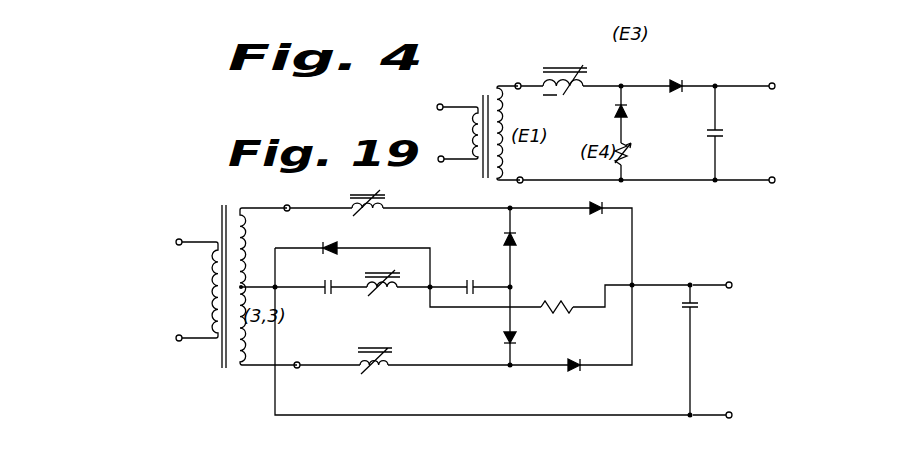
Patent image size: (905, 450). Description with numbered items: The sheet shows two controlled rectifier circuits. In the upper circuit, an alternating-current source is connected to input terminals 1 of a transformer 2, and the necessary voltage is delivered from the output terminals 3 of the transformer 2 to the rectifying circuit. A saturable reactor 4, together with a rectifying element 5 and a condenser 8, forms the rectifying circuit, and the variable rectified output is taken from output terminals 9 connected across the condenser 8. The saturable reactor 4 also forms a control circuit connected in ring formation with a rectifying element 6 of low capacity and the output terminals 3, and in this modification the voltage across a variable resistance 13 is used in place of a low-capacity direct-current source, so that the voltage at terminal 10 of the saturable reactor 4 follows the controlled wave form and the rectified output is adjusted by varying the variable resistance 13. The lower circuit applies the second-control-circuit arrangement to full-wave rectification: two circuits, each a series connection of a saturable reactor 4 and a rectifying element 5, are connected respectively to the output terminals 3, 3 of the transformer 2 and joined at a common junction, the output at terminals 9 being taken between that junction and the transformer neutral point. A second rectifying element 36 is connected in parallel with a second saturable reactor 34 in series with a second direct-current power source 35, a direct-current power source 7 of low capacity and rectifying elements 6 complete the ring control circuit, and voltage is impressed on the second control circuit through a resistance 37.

In FIG. 4, the input terminals 1 is at (437, 106).
In FIG. 19, the input terminals 1 is at (176, 242).
In FIG. 4, the transformer 2 is at (486, 93).
In FIG. 19, the transformer 2 is at (224, 207).
In FIG. 4, the output terminals of the transformer 3 is at (518, 82).
In FIG. 19, the output terminals of the transformer 3 is at (288, 205).
In FIG. 4, the saturable reactor 4 is at (565, 70).
In FIG. 19, the saturable reactor 4 is at (364, 193).
In FIG. 4, the rectifying element 5 is at (676, 83).
In FIG. 19, the rectifying element 5 is at (596, 213).
In FIG. 4, the rectifying element of low capacity 6 is at (615, 112).
In FIG. 19, the rectifying element of low capacity 6 is at (517, 240).
In FIG. 19, the direct-current power source of low capacity 7 is at (470, 283).
In FIG. 4, the condenser 8 is at (727, 135).
In FIG. 19, the condenser 8 is at (696, 309).
In FIG. 4, the output terminals 9 is at (776, 87).
In FIG. 19, the output terminals 9 is at (733, 285).
In FIG. 4, the terminal of the saturable reactor 10 is at (621, 83).
In FIG. 4, the variable resistance 13 is at (636, 161).
In FIG. 19, the second saturable reactor 34 is at (377, 293).
In FIG. 19, the second direct-current power source 35 is at (331, 295).
In FIG. 19, the second rectifying element 36 is at (332, 243).
In FIG. 19, the resistance 37 is at (566, 304).